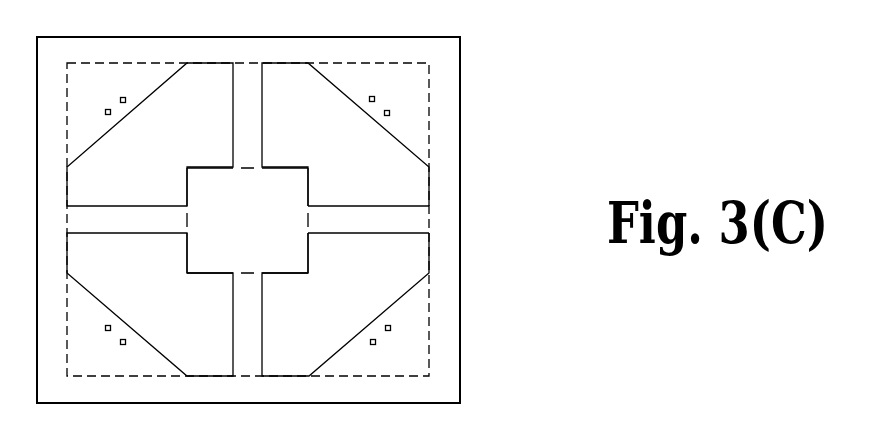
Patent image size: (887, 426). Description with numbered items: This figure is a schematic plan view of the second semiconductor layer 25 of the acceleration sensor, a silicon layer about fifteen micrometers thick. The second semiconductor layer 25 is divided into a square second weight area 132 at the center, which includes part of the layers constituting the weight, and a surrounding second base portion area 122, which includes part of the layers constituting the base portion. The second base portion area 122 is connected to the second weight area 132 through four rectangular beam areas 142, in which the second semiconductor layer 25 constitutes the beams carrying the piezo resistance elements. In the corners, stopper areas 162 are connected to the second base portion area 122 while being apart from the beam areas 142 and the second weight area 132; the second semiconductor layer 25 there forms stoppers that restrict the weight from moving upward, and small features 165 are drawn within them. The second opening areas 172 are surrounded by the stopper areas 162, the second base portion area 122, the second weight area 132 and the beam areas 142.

The second semiconductor layer 25 is at (500, 53).
The second base portion area 122 is at (443, 98).
The second weight area 132 is at (262, 198).
The beam areas 142 is at (415, 223).
The stopper areas 162 is at (415, 357).
The small contact / bump 165 is at (392, 327).
The second opening areas 172 is at (368, 166).